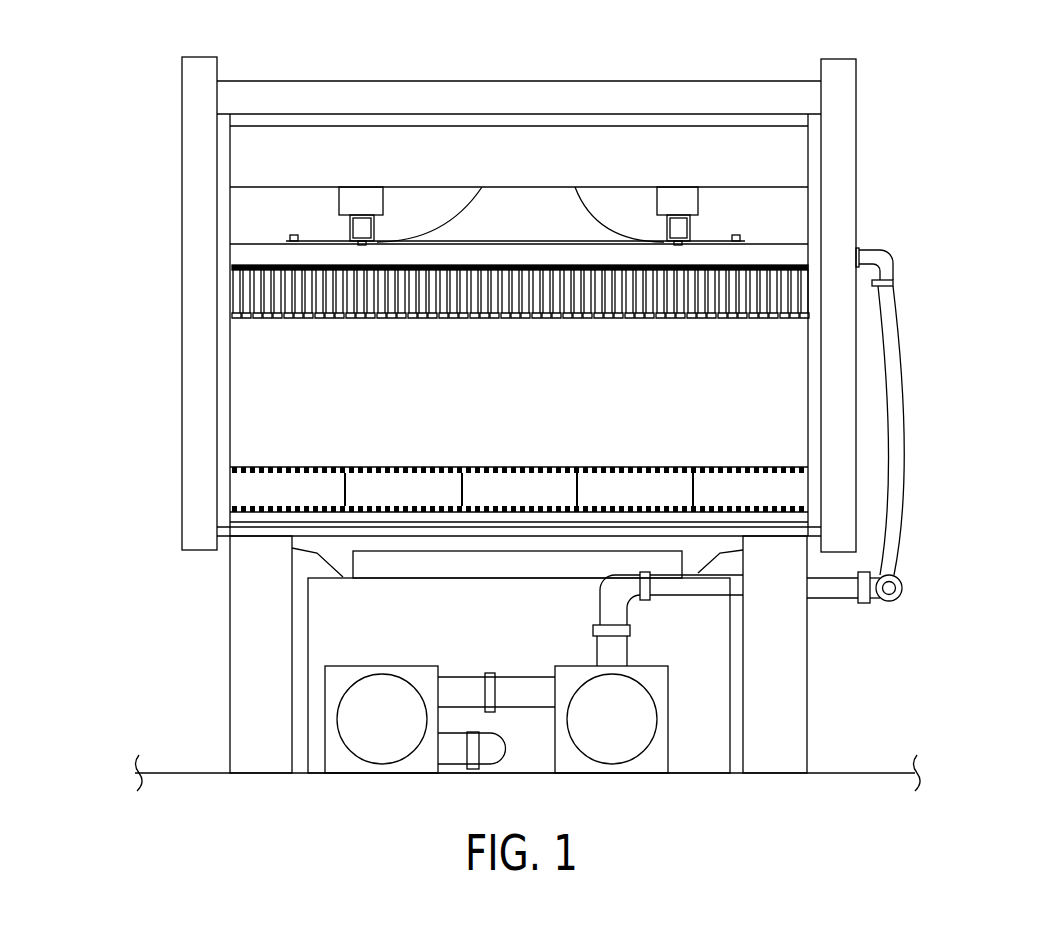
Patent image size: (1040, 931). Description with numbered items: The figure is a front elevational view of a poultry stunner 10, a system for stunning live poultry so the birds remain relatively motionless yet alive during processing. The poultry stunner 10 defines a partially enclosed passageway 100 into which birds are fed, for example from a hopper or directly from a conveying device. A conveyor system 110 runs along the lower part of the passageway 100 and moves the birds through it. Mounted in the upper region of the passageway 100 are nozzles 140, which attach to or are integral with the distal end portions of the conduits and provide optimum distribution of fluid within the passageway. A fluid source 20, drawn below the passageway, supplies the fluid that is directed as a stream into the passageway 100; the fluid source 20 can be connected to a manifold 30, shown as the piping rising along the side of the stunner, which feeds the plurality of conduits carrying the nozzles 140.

The poultry stunner 10 is at (975, 112).
The fluid source 20 is at (640, 719).
The manifold 30 is at (903, 588).
The partially enclosed passageway 100 is at (533, 413).
The conveyor system 110 is at (770, 503).
The nozzle 140 is at (657, 322).